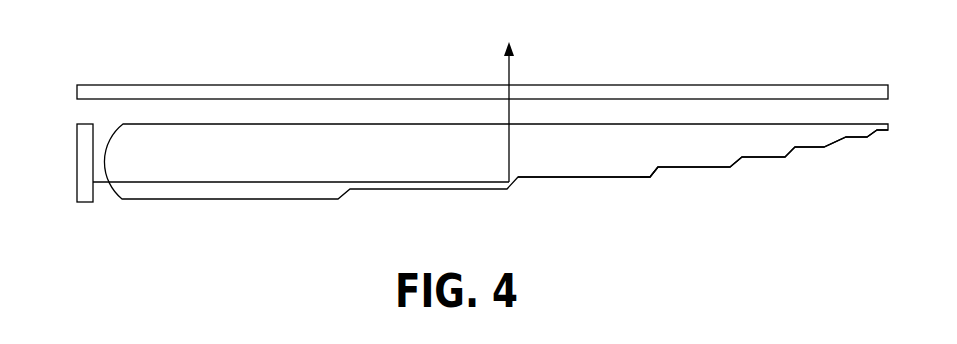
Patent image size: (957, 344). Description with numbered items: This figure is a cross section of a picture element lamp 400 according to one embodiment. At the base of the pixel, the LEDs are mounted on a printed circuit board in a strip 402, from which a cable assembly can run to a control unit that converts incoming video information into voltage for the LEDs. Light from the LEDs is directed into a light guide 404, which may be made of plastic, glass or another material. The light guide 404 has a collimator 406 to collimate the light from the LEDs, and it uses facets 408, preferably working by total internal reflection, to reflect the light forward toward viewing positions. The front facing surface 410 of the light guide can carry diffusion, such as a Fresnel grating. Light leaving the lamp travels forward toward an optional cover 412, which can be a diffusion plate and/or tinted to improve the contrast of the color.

The backlight assembly 400 is at (160, 52).
The strip 402 is at (77, 166).
The light guide 404 is at (692, 170).
The collimator 406 is at (113, 186).
The facets 408 is at (655, 173).
The front facing surface 410 is at (885, 121).
The cover 412 is at (822, 84).